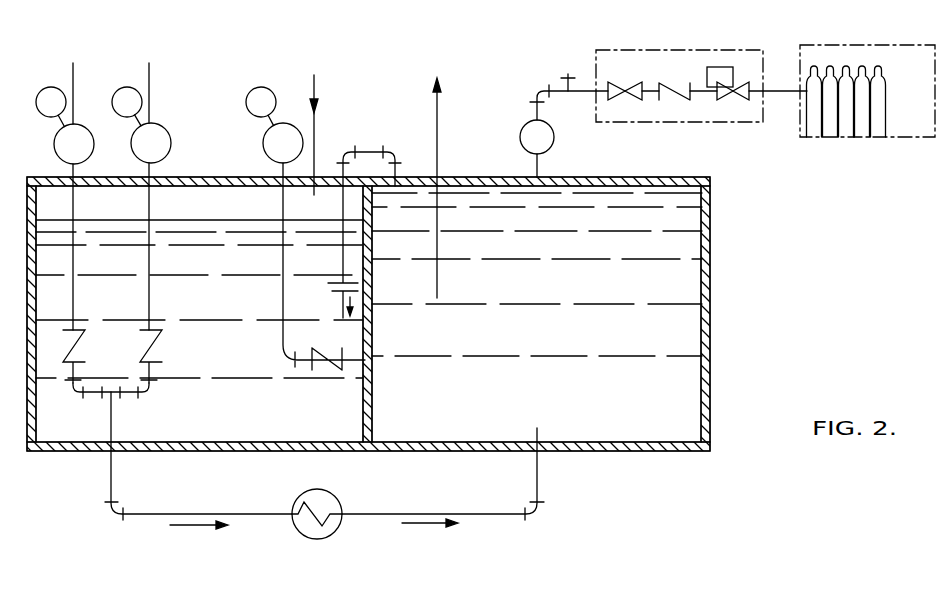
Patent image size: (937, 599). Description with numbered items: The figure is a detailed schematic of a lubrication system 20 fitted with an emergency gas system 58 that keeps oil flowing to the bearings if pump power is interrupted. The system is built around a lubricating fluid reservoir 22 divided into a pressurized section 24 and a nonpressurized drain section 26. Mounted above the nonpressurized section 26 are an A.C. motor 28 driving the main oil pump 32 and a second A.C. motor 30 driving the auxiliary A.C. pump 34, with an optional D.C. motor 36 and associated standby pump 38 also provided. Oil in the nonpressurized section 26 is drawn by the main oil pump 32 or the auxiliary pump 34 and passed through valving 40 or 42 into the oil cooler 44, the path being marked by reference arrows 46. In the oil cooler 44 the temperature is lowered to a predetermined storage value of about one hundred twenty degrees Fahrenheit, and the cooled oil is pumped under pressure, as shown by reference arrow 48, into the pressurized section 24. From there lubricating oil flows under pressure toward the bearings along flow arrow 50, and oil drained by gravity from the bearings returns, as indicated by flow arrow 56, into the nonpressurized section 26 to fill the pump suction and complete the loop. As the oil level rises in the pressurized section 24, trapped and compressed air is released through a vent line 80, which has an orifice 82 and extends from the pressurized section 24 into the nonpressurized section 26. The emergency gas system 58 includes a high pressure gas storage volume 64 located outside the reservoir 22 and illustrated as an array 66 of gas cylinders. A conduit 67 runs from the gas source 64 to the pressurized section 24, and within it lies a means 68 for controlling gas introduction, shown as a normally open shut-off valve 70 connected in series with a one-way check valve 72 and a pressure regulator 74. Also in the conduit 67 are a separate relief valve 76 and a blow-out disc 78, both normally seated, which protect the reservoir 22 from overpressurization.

The lubrication system 20 is at (234, 123).
The lubricating fluid reservoir 22 is at (619, 481).
The pressurized section 24 is at (577, 335).
The nonpressurized section 26 is at (246, 355).
The A.C. motor 28 is at (51, 87).
The A.C. motor 30 is at (127, 87).
The main oil pump 32 is at (56, 150).
The auxiliary A.C. pump 34 is at (136, 138).
The D.C. motor 36 is at (262, 87).
The standby pump 38 is at (265, 152).
The valving 40 is at (80, 349).
The valving 42 is at (156, 349).
The oil cooler 44 is at (323, 536).
The reference arrows 46 is at (196, 525).
The reference arrow 48 is at (430, 523).
The flow arrow 50 is at (437, 160).
The flow arrow 56 is at (314, 90).
The emergency gas system 58 is at (796, 38).
The high pressure gas storage volume 64 is at (893, 52).
The array of gas cylinders 66 is at (862, 127).
The conduit 67 is at (549, 100).
The means for controlling the introduction of high pressure gas 68 is at (675, 50).
The shut-off valve 70 is at (625, 86).
The one-way check valve 72 is at (675, 88).
The pressure regulator 74 is at (733, 93).
The relief valve 76 is at (521, 130).
The blow-out disc 78 is at (577, 60).
The vent line 80 is at (372, 152).
The orifice 82 is at (330, 288).